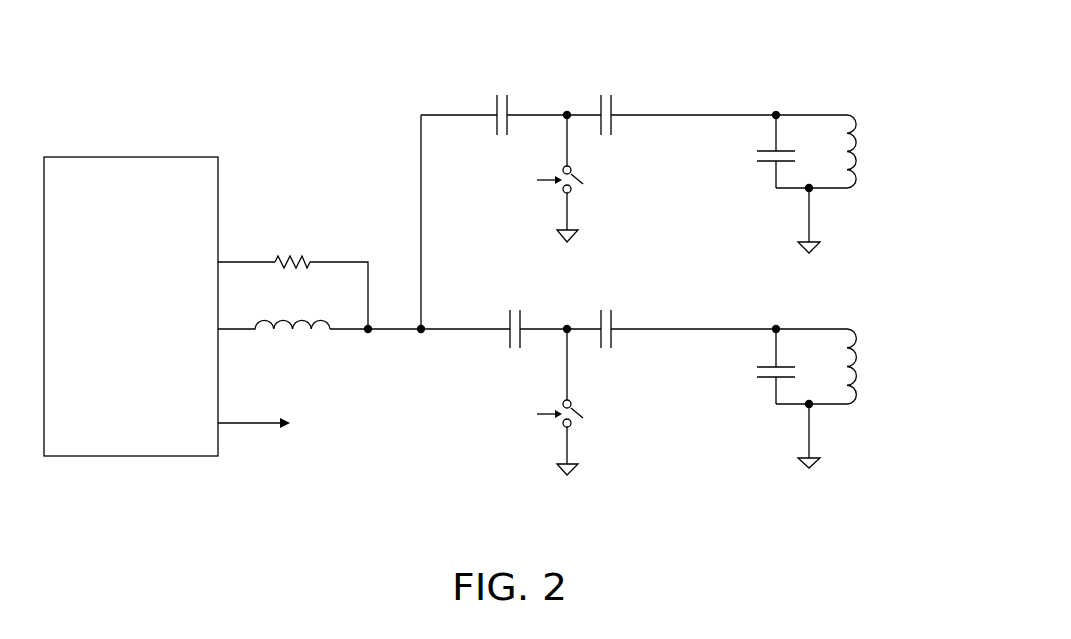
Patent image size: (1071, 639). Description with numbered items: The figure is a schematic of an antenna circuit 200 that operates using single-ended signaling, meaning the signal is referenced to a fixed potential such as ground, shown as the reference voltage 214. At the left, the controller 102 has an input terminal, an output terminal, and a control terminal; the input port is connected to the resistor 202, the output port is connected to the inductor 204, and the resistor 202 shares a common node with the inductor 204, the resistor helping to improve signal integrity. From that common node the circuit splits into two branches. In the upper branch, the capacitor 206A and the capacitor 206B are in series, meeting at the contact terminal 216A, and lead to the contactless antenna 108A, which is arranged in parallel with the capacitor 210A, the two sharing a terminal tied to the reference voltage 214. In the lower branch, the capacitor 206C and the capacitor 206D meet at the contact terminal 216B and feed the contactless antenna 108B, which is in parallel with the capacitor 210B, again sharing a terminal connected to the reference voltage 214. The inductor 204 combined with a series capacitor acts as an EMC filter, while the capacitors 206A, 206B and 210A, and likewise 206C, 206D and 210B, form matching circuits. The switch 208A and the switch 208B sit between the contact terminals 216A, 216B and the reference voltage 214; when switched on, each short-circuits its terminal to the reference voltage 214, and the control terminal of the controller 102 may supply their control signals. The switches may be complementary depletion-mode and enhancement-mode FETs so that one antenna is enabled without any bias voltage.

The controller 102 is at (173, 156).
The antenna circuit 200 is at (784, 52).
The resistor 202 is at (293, 254).
The inductor 204 is at (293, 338).
The capacitor 206A is at (497, 110).
The capacitor 206B is at (612, 109).
The capacitor 206C is at (510, 323).
The capacitor 206D is at (612, 321).
The switch 208A is at (583, 181).
The switch 208B is at (583, 415).
The capacitor 210A is at (766, 162).
The capacitor 210B is at (766, 378).
The contactless antenna 108A is at (856, 192).
The contactless antenna 108B is at (856, 408).
The reference voltage 214 is at (560, 232).
The contact terminal 216A is at (565, 111).
The contact terminal 216B is at (565, 326).